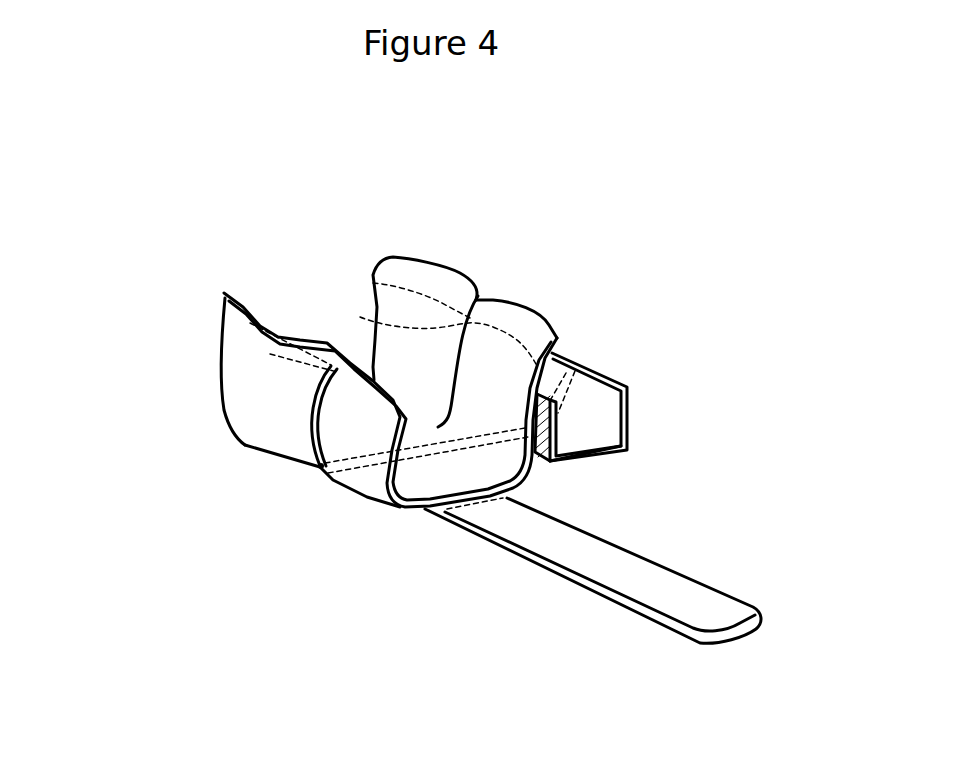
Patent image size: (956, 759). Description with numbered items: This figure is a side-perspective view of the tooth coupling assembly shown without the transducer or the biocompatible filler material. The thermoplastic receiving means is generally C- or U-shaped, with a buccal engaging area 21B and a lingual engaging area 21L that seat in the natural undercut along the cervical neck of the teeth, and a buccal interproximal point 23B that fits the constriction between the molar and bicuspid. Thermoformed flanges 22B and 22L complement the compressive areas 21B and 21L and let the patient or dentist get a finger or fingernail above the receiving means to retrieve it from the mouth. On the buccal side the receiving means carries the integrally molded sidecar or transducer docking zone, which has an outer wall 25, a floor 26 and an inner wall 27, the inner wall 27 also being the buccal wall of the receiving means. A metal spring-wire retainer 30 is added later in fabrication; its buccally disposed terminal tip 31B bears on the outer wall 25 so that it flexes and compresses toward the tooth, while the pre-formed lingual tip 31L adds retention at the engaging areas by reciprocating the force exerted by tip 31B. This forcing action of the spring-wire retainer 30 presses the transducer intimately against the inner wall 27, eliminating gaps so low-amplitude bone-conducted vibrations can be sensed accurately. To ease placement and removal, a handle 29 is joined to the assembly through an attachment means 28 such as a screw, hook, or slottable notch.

The lingual engaging area 21L is at (267, 328).
The lingual flange 22L is at (272, 352).
The lingual terminal tip of spring-wire retainer 31L is at (323, 368).
The spring-wire retainer 30 is at (300, 432).
The buccal engaging area 21B is at (397, 290).
The buccal flange 22B is at (447, 283).
The buccal interproximal point 23B is at (372, 307).
The buccal terminal tip of spring-wire retainer 31B is at (575, 371).
The outer wall 25 is at (629, 406).
The floor 26 is at (575, 440).
The inner wall 27 is at (549, 463).
The attachment means 28 is at (463, 503).
The handle 29 is at (678, 612).